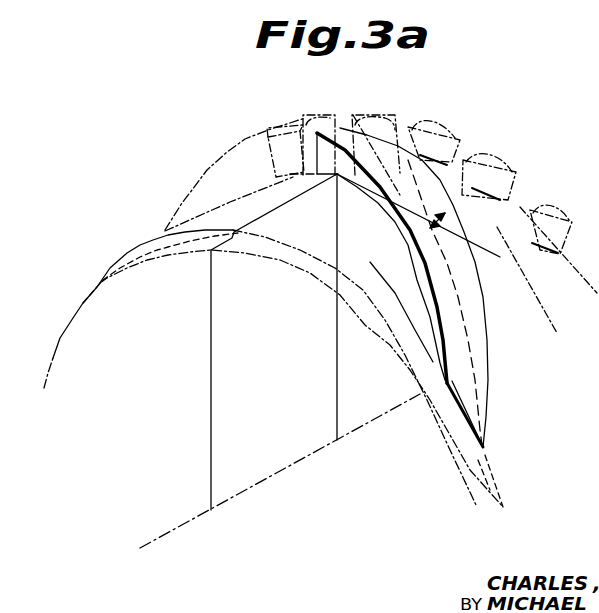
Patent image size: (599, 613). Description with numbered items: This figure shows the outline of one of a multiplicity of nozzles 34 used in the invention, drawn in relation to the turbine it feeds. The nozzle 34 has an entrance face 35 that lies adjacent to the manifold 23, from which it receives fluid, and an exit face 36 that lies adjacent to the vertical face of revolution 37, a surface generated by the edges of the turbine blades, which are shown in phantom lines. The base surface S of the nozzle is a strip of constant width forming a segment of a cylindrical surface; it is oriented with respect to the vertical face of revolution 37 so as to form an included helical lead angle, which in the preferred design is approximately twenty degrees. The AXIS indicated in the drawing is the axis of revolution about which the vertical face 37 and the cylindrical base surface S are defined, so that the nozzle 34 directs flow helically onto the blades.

The manifold 23 is at (273, 381).
The nozzle 34 is at (476, 318).
The entrance face 35 is at (472, 420).
The exit face 36 is at (340, 128).
The vertical face of revolution 37 is at (228, 165).
The base surface S is at (398, 228).
The gear axis AXIS is at (140, 550).